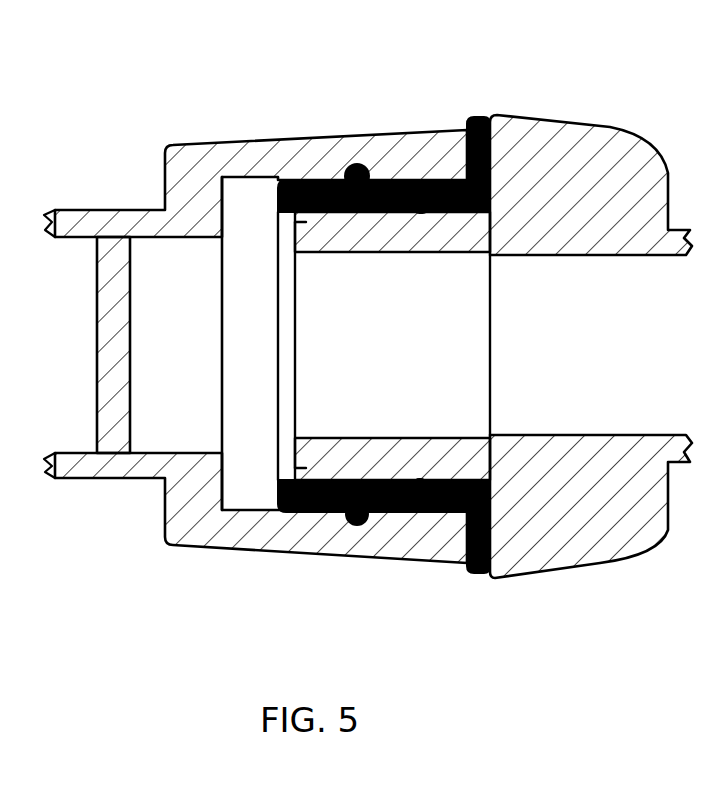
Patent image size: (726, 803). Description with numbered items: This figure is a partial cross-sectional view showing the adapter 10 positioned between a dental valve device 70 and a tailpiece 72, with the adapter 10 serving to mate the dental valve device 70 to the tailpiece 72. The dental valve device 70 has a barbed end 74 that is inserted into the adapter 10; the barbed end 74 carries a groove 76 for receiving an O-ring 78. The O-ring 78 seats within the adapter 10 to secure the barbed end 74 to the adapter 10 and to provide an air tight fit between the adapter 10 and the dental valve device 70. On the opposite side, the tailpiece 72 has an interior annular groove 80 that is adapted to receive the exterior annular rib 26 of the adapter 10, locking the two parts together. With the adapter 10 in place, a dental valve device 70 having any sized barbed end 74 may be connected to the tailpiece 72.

The adapter 10 is at (437, 97).
The exterior annular rib 26 is at (355, 524).
The dental valve device 70 is at (665, 118).
The tailpiece 72 is at (228, 122).
The barbed end 74 is at (344, 447).
The groove 76 is at (420, 480).
The O-ring 78 is at (422, 212).
The interior annular groove 80 is at (355, 168).